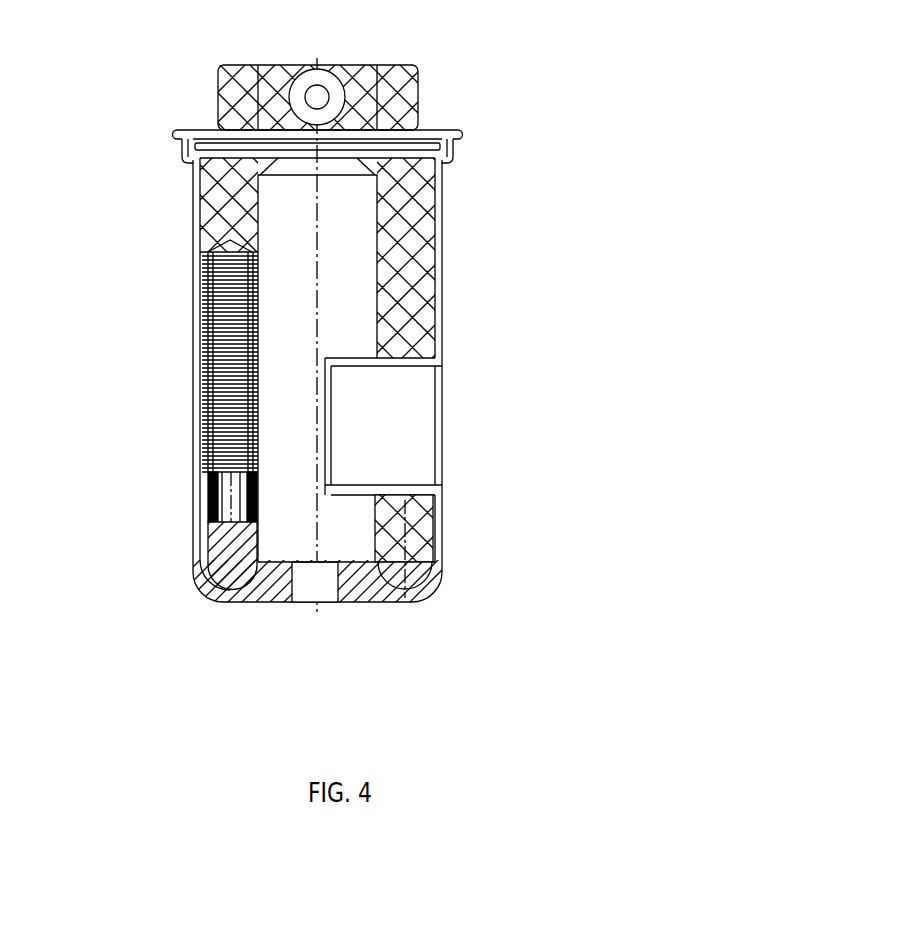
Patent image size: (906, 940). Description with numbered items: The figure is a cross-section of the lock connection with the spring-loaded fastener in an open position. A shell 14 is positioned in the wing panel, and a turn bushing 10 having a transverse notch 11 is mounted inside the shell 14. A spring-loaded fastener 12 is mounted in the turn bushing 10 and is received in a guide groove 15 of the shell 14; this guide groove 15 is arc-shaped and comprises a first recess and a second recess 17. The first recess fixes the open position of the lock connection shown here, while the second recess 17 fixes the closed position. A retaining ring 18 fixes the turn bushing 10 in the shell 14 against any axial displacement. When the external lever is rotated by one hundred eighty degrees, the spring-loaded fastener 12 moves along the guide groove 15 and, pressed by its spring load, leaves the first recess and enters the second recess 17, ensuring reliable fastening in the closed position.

The turn bushing 10 is at (222, 198).
The transverse notch 11 is at (400, 435).
The spring-loaded fastener 12 is at (205, 430).
The shell 14 is at (265, 600).
The guide groove 15 is at (427, 562).
The second recess of the guide groove 17 is at (412, 577).
The retaining ring 18 is at (417, 148).